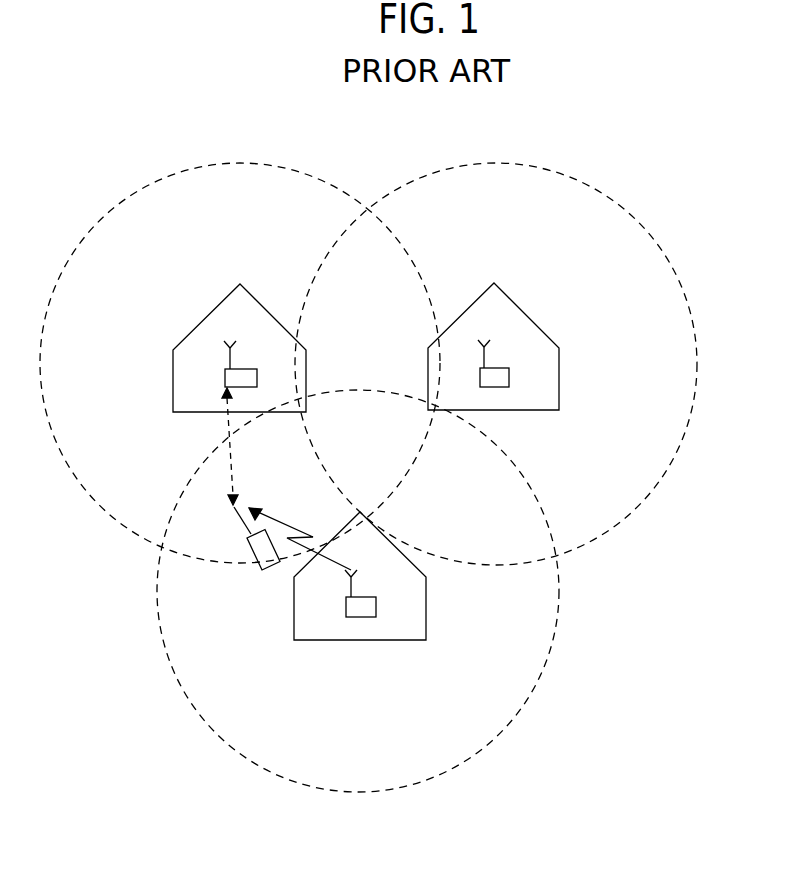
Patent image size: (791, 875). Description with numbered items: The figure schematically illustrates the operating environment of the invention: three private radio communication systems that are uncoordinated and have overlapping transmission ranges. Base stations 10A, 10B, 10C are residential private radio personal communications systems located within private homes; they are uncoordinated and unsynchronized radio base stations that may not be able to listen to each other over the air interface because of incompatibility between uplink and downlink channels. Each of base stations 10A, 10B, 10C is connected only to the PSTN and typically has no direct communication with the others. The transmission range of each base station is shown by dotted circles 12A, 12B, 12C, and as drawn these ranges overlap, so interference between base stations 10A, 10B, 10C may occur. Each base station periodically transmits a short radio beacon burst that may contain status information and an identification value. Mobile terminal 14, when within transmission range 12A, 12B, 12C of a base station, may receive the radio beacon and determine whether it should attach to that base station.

The transmission range 12A is at (523, 712).
The transmission range 12B is at (250, 163).
The transmission range 12C is at (577, 182).
The base station 10A is at (345, 615).
The base station 10B is at (225, 378).
The base station 10C is at (511, 375).
The mobile terminal 14 is at (248, 540).